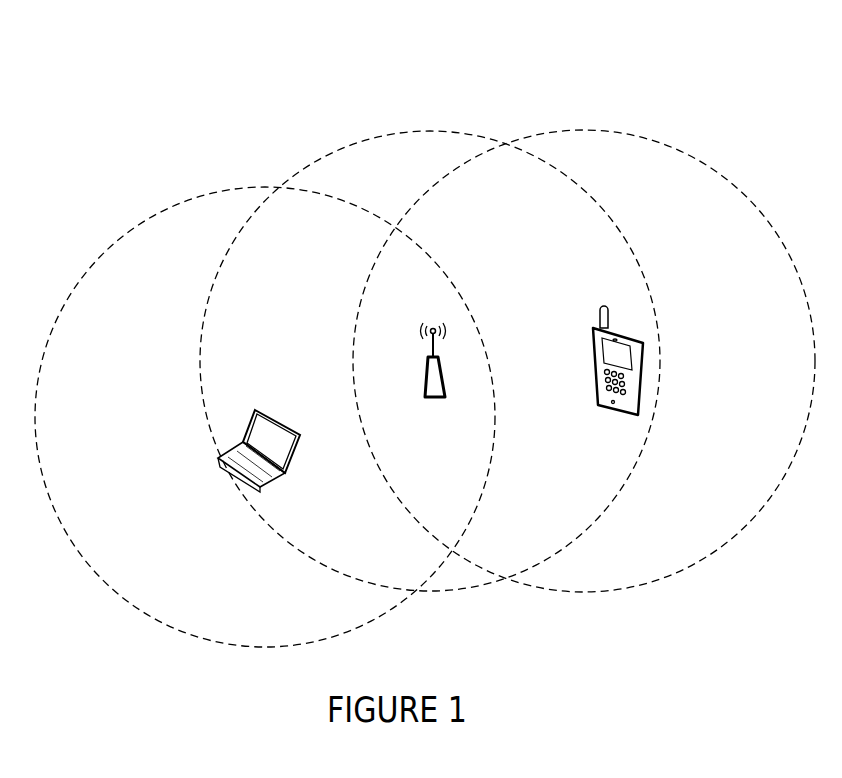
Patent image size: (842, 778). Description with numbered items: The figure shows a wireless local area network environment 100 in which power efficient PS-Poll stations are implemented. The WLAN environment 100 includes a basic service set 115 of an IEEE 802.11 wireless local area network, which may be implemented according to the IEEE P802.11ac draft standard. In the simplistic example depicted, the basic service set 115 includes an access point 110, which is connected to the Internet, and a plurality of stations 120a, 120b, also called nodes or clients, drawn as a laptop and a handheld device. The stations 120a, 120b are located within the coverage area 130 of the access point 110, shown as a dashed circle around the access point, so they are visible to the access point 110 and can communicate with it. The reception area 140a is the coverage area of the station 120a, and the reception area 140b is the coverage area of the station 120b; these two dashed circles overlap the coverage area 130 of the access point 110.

The WLAN environment 100 is at (567, 75).
The access point 110 is at (432, 399).
The basic service set 115 is at (440, 296).
The station 120a is at (280, 420).
The station 120b is at (623, 330).
The coverage area 130 is at (428, 590).
The reception area 140a is at (252, 649).
The reception area 140b is at (584, 593).